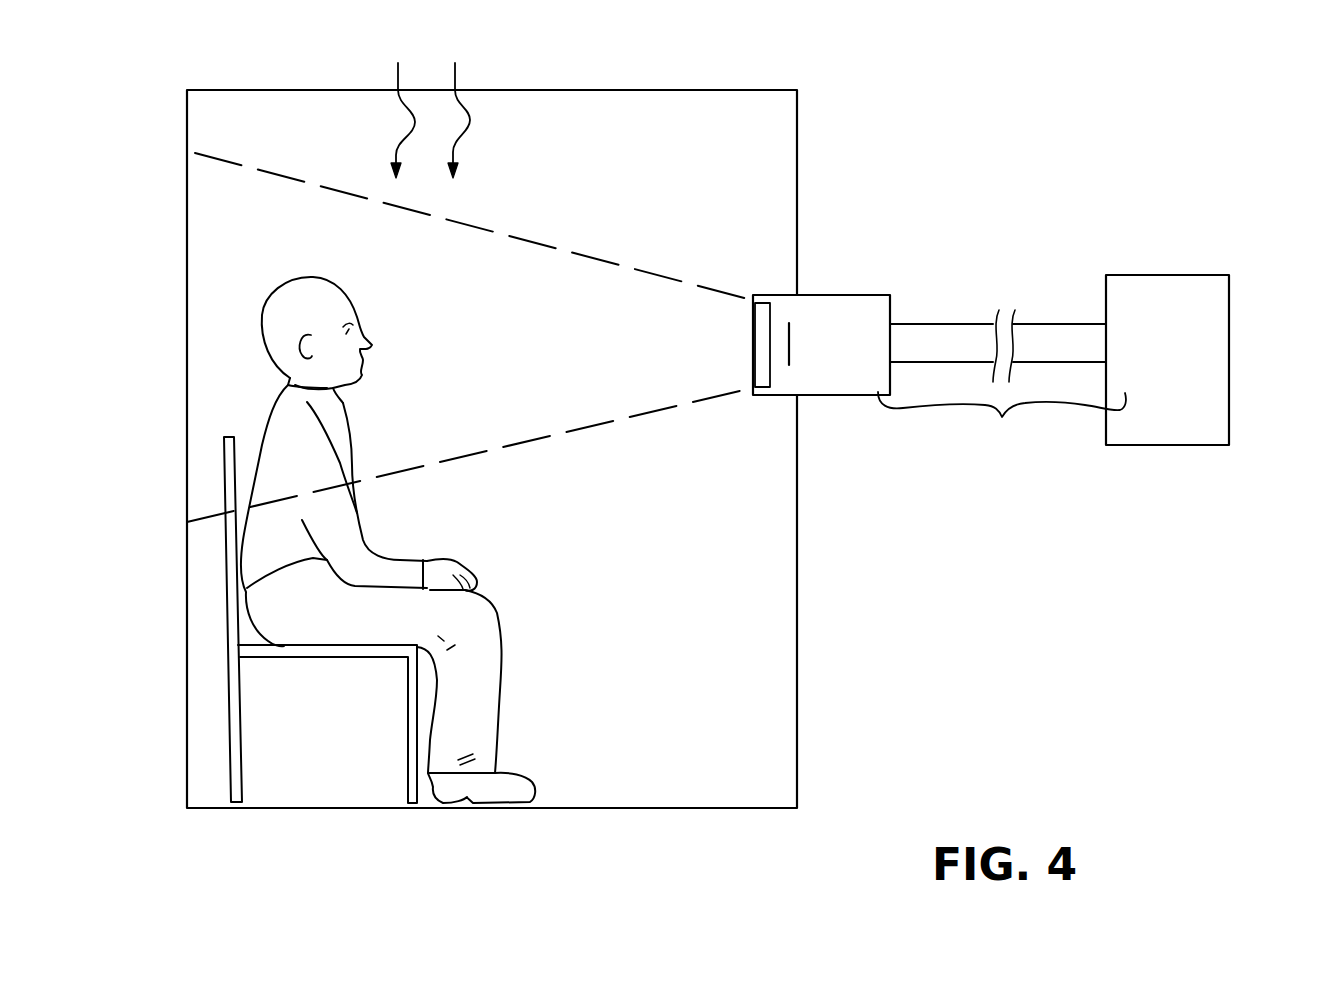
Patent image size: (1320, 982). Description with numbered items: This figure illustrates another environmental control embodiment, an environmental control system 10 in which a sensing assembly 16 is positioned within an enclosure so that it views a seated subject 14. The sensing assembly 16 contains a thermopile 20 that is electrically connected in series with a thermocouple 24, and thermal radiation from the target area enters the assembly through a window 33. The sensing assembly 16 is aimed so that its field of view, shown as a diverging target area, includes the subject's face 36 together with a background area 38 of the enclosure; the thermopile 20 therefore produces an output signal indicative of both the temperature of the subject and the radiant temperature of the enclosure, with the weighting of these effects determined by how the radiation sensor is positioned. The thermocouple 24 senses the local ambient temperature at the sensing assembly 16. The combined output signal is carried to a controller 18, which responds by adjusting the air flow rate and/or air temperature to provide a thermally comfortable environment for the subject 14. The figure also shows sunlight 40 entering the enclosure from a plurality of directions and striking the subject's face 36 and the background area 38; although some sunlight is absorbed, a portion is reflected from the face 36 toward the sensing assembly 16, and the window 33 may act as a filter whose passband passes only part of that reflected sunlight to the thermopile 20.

The imaging system 10 is at (1003, 235).
The subject 14 is at (327, 540).
The sensing assembly 16 is at (821, 352).
The controller 18 is at (1178, 360).
The thermopile 20 is at (793, 347).
The thermocouple 24 is at (1002, 379).
The window 33 is at (760, 325).
The subject's face 36 is at (357, 321).
The background area 38 is at (187, 218).
The sunlight 40 is at (430, 109).